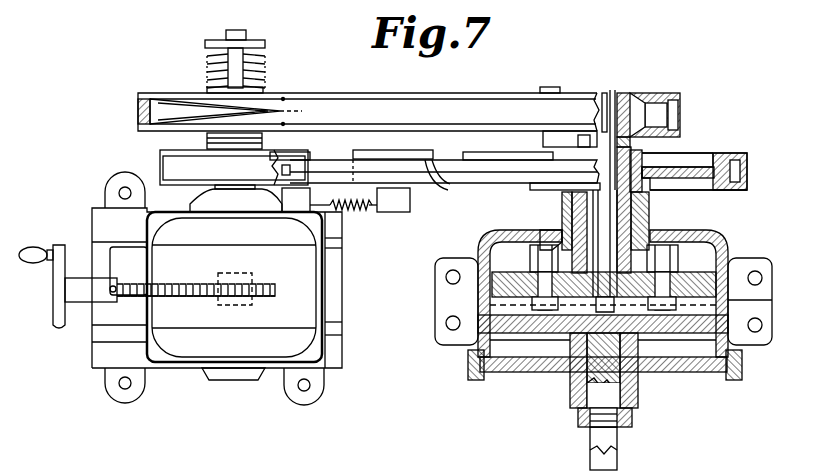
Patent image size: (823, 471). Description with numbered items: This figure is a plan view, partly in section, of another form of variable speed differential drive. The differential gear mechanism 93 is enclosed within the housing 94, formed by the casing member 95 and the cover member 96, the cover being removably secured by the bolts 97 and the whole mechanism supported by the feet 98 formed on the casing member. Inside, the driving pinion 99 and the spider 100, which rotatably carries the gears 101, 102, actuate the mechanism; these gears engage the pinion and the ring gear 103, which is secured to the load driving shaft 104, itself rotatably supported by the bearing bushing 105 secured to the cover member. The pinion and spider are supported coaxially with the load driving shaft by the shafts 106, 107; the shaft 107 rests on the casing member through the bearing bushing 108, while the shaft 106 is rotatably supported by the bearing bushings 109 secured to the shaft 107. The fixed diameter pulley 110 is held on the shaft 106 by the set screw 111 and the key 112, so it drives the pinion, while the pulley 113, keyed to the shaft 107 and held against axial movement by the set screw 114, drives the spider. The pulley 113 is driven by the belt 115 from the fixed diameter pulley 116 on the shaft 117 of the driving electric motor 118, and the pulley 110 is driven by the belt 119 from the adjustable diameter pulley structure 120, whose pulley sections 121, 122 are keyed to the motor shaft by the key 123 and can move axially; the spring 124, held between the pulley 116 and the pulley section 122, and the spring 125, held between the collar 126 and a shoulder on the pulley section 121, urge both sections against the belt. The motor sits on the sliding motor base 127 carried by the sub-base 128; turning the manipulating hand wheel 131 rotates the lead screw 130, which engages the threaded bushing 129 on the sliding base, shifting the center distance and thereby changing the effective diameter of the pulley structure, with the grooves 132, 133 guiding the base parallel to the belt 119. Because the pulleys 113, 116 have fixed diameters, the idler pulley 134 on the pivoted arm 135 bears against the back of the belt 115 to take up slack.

The differential gear mechanism 93 is at (480, 255).
The housing 94 is at (680, 250).
The casing member 95 is at (718, 250).
The cover member 96 is at (683, 372).
The bolts 97 is at (736, 380).
The feet 98 is at (752, 270).
The driving pinion 99 is at (604, 293).
The spider 100 is at (556, 240).
The gear 101 is at (528, 264).
The gear 102 is at (603, 305).
The ring gear 103 is at (722, 312).
The load driving shaft 104 is at (618, 443).
The bearing bushing 105 is at (638, 395).
The shaft 106 is at (574, 193).
The shaft 107 is at (565, 205).
The bearing bushing 108 is at (640, 205).
The bearing bushings 109 is at (648, 187).
The fixed diameter pulley 110 is at (670, 95).
The set screw 111 is at (631, 141).
The key 112 is at (606, 94).
The pulley 113 is at (722, 158).
The set screw 114 is at (644, 160).
The belt 115 is at (449, 189).
The fixed diameter pulley 116 is at (160, 160).
The shaft 117 is at (210, 195).
The driving electric motor 118 is at (252, 265).
The belt 119 is at (445, 97).
The adjustable diameter pulley structure 120 is at (336, 119).
The pulley section 121 is at (288, 97).
The pulley section 122 is at (288, 125).
The key 123 is at (262, 62).
The spring 124 is at (207, 143).
The spring 125 is at (210, 72).
The collar 126 is at (205, 43).
The sliding motor base 127 is at (312, 385).
The sub-base 128 is at (340, 346).
The threaded bushing 129 is at (252, 276).
The lead screw 130 is at (100, 324).
The manipulating hand wheel 131 is at (57, 248).
The groove 132 is at (138, 232).
The groove 133 is at (136, 290).
The idler pulley 134 is at (402, 155).
The arm 135 is at (410, 203).